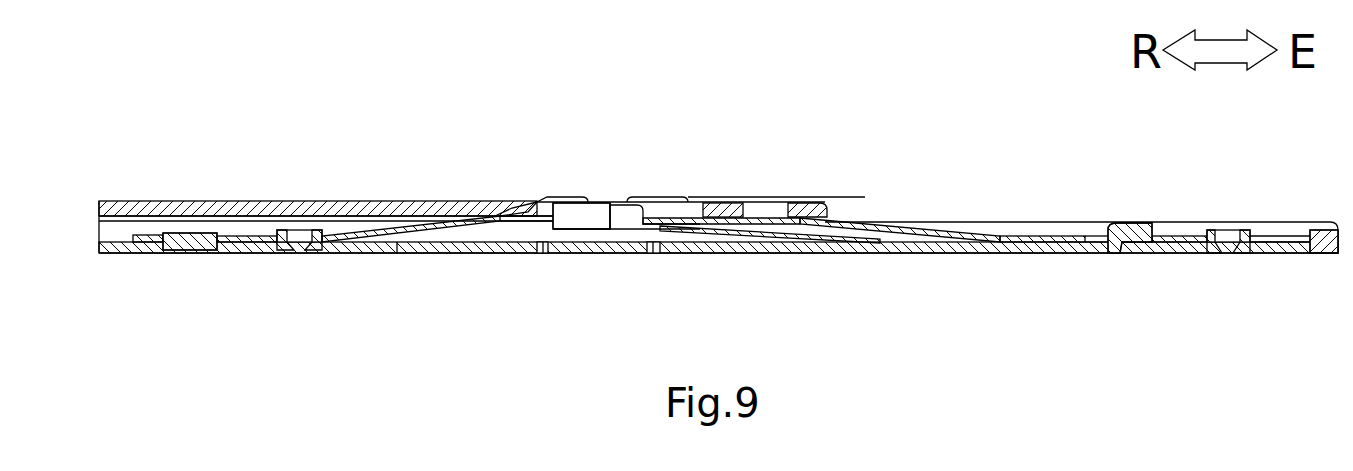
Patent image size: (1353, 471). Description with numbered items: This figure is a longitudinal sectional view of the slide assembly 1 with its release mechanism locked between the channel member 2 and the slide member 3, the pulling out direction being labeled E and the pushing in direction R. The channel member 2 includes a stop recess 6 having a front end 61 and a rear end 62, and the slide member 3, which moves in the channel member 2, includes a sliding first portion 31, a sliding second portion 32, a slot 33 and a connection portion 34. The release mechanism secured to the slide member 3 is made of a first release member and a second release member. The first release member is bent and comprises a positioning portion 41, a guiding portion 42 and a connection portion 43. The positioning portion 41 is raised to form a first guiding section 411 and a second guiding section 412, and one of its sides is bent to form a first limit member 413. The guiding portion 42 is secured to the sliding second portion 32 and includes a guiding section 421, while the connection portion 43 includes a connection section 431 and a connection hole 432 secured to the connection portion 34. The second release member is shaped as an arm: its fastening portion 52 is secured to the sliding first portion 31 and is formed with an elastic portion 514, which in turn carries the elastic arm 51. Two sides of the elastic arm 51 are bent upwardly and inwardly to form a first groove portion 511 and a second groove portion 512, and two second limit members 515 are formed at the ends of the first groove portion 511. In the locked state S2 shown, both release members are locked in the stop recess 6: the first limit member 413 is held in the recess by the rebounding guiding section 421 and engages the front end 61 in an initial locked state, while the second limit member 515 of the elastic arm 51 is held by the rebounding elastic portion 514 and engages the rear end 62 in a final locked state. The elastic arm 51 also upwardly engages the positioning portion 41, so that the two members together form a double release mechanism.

The slide assembly 1 is at (222, 152).
The channel member 2 is at (300, 201).
The slide member 3 is at (1305, 221).
The stop recess 6 is at (530, 203).
The sliding first portion 31 is at (1263, 253).
The sliding second portion 32 is at (232, 253).
The slot 33 is at (598, 253).
The connection portion 34 is at (1133, 230).
The positioning portion 41 is at (508, 208).
The guiding portion 42 is at (150, 234).
The connection portion 43 is at (1142, 241).
The elastic arm 51 is at (663, 229).
The fastening portion 52 is at (1273, 233).
The front end 61 is at (707, 208).
The rear end 62 is at (498, 205).
The first guiding section 411 is at (652, 197).
The second guiding section 412 is at (565, 197).
The first limit member 413 is at (703, 204).
The guiding section 421 is at (442, 227).
The connection section 431 is at (915, 229).
The connection hole 432 is at (1090, 236).
The first groove portion 511 is at (578, 207).
The second groove portion 512 is at (620, 229).
The elastic portion 514 is at (776, 240).
The second limit member 515 is at (545, 222).
The locked state S2 is at (795, 197).